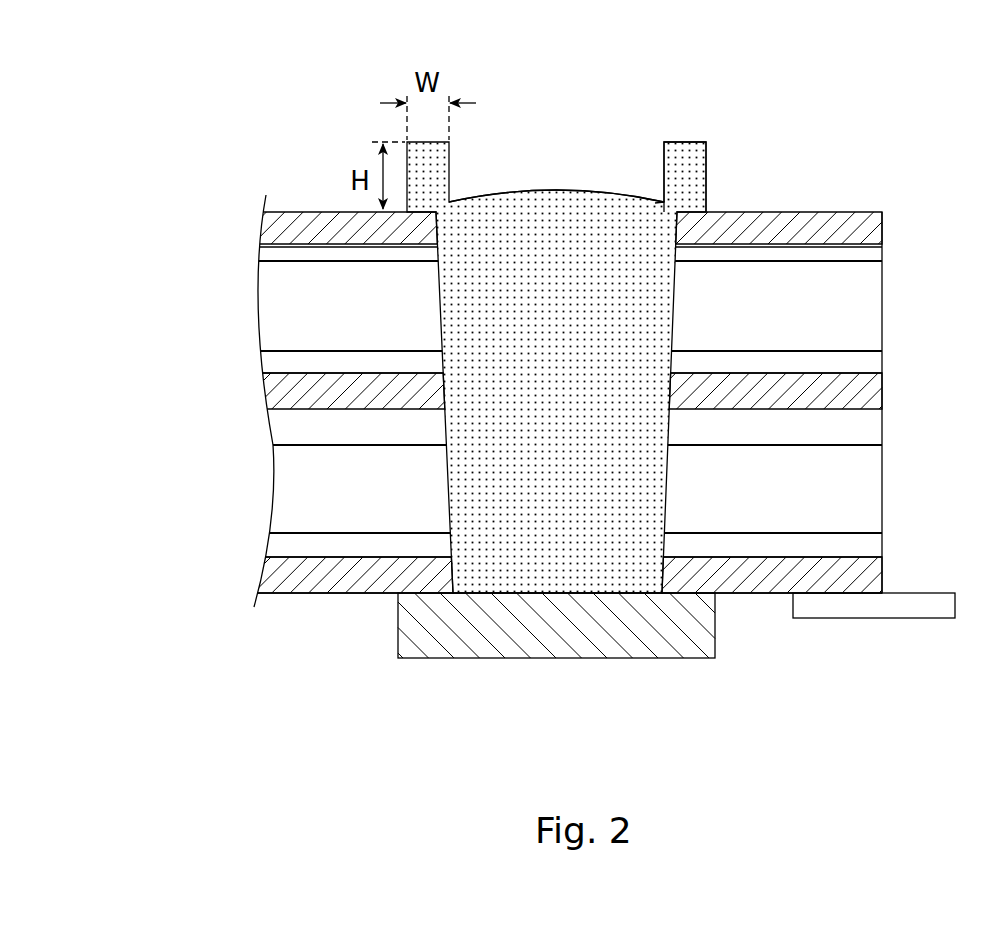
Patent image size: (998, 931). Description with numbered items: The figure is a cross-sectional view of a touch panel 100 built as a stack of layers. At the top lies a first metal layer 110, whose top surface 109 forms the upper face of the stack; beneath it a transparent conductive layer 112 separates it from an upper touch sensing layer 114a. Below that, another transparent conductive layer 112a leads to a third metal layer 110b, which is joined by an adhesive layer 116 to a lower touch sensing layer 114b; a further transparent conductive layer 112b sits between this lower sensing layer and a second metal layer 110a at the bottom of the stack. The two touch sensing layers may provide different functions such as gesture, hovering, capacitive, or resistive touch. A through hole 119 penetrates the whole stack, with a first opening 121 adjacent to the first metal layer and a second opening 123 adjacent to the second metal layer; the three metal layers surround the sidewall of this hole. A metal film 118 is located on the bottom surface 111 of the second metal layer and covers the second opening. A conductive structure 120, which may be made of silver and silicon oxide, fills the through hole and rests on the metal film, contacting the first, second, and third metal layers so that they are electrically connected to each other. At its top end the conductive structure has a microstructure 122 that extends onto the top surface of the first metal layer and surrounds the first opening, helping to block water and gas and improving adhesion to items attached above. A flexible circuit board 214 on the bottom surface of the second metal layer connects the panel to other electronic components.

The touch panel 100 is at (94, 57).
The top surface of the first metal layer 109 is at (830, 209).
The first metal layer 110 is at (884, 229).
The transparent conductive layer 112 is at (884, 256).
The touch sensing layer 114a is at (884, 308).
The transparent conductive layer 112a is at (884, 358).
The third metal layer 110b is at (884, 388).
The adhesive layer 116 is at (884, 426).
The touch sensing layer 114b is at (884, 484).
The transparent conductive layer 112b is at (884, 543).
The second metal layer 110a is at (884, 571).
The bottom surface of the second metal layer 111 is at (752, 597).
The metal film 118 is at (462, 650).
The through hole 119 is at (598, 242).
The conductive structure 120 is at (523, 237).
The first opening 121 is at (673, 202).
The microstructure 122 is at (680, 155).
The second opening 123 is at (620, 596).
The flexible circuit board 214 is at (883, 610).